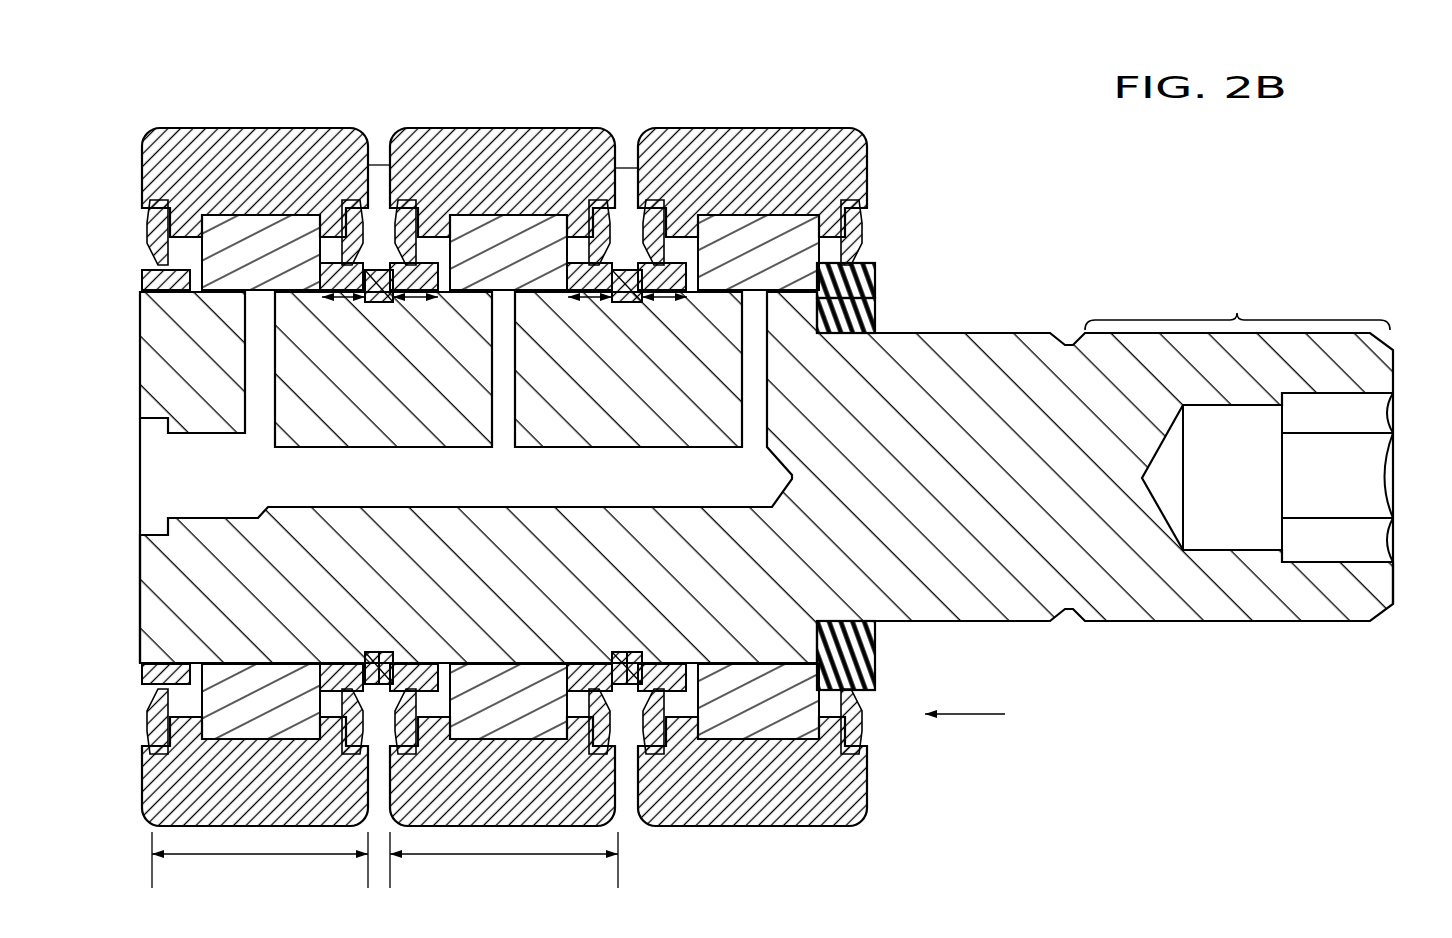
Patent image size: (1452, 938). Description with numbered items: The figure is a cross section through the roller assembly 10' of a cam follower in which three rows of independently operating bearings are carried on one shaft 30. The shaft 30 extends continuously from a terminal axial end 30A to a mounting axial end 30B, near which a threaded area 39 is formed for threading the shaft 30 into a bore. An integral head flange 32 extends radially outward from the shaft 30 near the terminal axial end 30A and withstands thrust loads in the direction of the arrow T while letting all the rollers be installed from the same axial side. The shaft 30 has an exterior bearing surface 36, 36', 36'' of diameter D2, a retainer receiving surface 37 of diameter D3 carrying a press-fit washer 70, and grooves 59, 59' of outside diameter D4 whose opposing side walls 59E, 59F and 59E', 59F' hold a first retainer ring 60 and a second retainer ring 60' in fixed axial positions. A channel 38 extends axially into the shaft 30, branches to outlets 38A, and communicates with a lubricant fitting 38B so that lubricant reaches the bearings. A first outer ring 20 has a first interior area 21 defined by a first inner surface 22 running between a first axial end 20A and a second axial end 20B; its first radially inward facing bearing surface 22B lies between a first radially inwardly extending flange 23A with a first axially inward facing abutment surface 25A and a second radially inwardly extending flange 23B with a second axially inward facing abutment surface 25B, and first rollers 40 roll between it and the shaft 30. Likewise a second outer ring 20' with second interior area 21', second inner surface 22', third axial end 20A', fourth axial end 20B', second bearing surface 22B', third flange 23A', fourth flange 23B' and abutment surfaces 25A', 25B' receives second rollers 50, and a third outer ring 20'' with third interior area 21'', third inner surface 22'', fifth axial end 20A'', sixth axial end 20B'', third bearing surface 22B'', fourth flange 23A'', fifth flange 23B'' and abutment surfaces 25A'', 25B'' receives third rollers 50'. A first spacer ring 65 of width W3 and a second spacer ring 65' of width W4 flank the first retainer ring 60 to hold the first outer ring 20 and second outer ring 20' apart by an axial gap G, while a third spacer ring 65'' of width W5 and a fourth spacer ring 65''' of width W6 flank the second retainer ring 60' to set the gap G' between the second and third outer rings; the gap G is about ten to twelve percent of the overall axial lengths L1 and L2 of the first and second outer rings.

The roller assembly 10' is at (997, 66).
The first outer ring 20 is at (255, 101).
The second outer ring 20' is at (502, 99).
The third outer ring 20'' is at (752, 97).
The first axial end 20A is at (218, 182).
The third axial end 20A' is at (523, 118).
The fifth axial end 20A'' is at (794, 169).
The second axial end 20B is at (369, 144).
The fourth axial end 20B' is at (401, 115).
The sixth axial end 20B'' is at (670, 116).
The first interior area 21 is at (253, 174).
The second interior area 21' is at (517, 232).
The third interior area 21'' is at (780, 229).
The first inner surface 22 is at (130, 232).
The second inner surface 22' is at (558, 266).
The third inner surface 22'' is at (903, 177).
The first radially inward facing bearing surface 22B is at (214, 158).
The second radially inward facing bearing surface 22B' is at (513, 127).
The third radially inward facing bearing surface 22B'' is at (772, 128).
The first radially inwardly extending flange 23A is at (211, 303).
The third radially inwardly extending flange 23A' is at (602, 138).
The fourth radially inwardly extending flange 23A'' is at (879, 139).
The second radially inwardly extending flange 23B is at (294, 136).
The fourth radially inwardly extending flange 23B' is at (443, 160).
The fifth radially inwardly extending flange 23B'' is at (724, 141).
The first axially inward facing abutment surface 25A is at (187, 320).
The third axially inward facing abutment surface 25A' is at (600, 157).
The fourth axially inward facing abutment surface 25A'' is at (852, 157).
The second axially inward facing abutment surface 25B is at (341, 138).
The fourth axially inward facing abutment surface 25B' is at (460, 144).
The fifth axially inward facing abutment surface 25B'' is at (711, 161).
The shaft 30 is at (988, 345).
The terminal axial end 30A is at (140, 610).
The mounting axial end 30B is at (1395, 572).
The head flange 32 is at (165, 284).
The exterior bearing surface 36 is at (261, 252).
The exterior bearing surface 36' is at (493, 317).
The exterior bearing surface 36'' is at (823, 252).
The retainer receiving surface 37 is at (878, 322).
The channel 38 is at (312, 492).
The outlet 38A is at (265, 355).
The lubricant fitting 38B is at (138, 497).
The threaded area 39 is at (1237, 297).
The first rollers 40 is at (292, 128).
The second rollers 50 is at (556, 159).
The third rollers 50' is at (813, 158).
The groove 59 is at (390, 324).
The groove 59' is at (641, 324).
The side wall 59E is at (345, 644).
The side wall 59F is at (406, 644).
The side wall 59E' is at (593, 642).
The side wall 59F' is at (655, 642).
The first retainer ring 60 is at (371, 324).
The second retainer ring 60' is at (620, 324).
The first spacer ring 65 is at (323, 259).
The second spacer ring 65' is at (443, 271).
The third spacer ring 65'' is at (698, 256).
The fourth spacer ring 65''' is at (724, 268).
The washer 70 is at (880, 290).
The axial gap G is at (401, 108).
The axial gap G' is at (649, 114).
The axial width W3 is at (342, 300).
The axial width W4 is at (425, 302).
The axial width W5 is at (590, 300).
The axial width W6 is at (670, 302).
The diameter D2 is at (795, 661).
The diameter D3 is at (855, 620).
The diameter D4 is at (378, 650).
The overall axial length L1 is at (273, 858).
The overall axial length L2 is at (508, 858).
The thrust direction arrow T is at (970, 718).